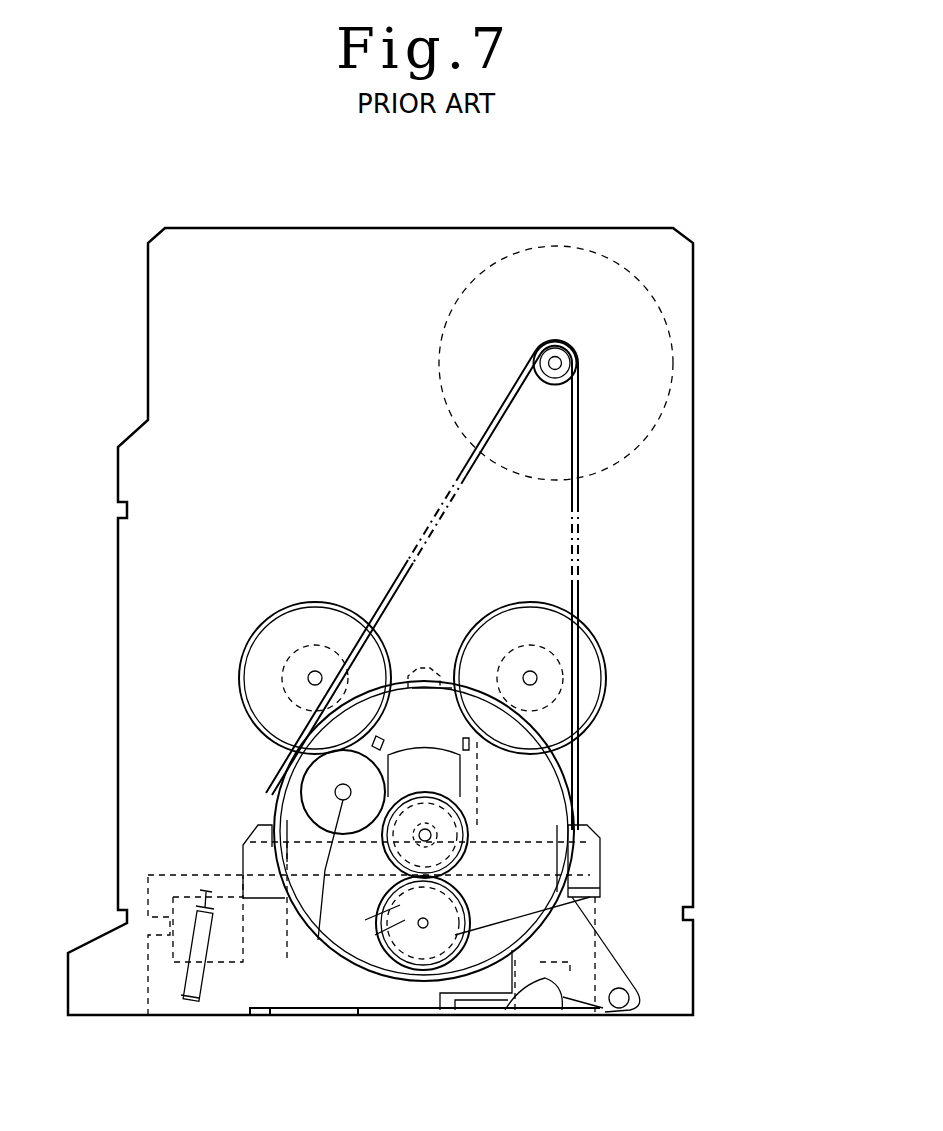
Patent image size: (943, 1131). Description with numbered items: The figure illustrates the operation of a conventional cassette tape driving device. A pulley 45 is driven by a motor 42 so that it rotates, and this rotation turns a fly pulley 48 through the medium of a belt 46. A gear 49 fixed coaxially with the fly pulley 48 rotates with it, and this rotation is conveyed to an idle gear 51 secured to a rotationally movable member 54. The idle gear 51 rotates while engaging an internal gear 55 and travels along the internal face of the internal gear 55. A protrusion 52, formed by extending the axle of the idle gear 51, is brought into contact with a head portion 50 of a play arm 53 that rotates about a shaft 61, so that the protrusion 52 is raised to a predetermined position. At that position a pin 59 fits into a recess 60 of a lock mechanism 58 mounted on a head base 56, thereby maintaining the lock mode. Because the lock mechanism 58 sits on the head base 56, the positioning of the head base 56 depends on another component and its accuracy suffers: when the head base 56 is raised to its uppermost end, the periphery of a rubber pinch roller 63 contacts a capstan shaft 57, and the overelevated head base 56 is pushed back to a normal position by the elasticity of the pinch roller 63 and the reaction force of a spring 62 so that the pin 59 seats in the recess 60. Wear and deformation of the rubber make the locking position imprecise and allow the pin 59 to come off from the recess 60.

The motor 42 is at (642, 412).
The pulley 45 is at (556, 342).
The belt 46 is at (410, 548).
The fly pulley 48 is at (300, 817).
The gear 49 is at (468, 838).
The head portion 50 is at (452, 928).
The idle gear 51 is at (392, 908).
The protrusion 52 is at (422, 928).
The play arm 53 is at (497, 920).
The rotationally movable member 54 is at (318, 940).
The internal gear 55 is at (300, 826).
The head base 56 is at (197, 873).
The capstan shaft 57 is at (455, 822).
The lock mechanism 58 is at (521, 1027).
The pin 59 is at (512, 1005).
The recess 60 is at (557, 1010).
The shaft 61 is at (619, 1000).
The spring 62 is at (207, 967).
The pinch roller 63 is at (575, 815).